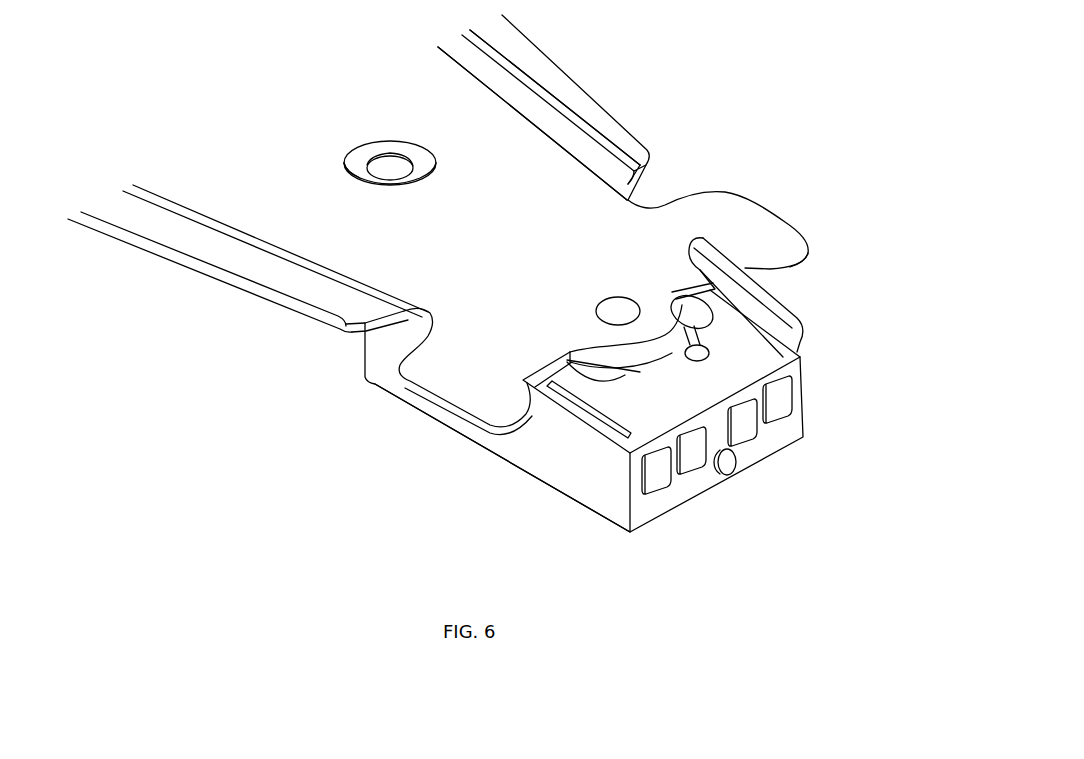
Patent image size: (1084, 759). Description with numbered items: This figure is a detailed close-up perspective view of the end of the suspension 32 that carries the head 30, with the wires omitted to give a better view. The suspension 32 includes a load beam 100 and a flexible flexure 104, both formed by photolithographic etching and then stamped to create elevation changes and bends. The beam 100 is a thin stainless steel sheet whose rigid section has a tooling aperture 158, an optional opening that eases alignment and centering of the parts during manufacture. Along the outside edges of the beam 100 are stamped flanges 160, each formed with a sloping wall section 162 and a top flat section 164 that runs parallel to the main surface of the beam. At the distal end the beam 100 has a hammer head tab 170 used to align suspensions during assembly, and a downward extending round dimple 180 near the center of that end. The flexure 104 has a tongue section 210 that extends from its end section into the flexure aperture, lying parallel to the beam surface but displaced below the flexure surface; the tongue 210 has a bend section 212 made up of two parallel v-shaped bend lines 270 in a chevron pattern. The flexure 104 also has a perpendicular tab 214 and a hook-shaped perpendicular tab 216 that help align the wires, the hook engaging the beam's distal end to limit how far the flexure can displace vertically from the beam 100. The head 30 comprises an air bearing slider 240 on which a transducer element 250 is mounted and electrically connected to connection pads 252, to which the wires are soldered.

The load beam 100 is at (343, 76).
The suspension 32 is at (252, 405).
The head 30 is at (378, 386).
The flexure 104 is at (419, 165).
The tooling aperture 158 is at (360, 156).
The outside edge flange 160 is at (515, 50).
The sloping wall section 162 is at (537, 112).
The top flat section 164 is at (587, 118).
The hammer head tab 170 is at (762, 207).
The round dimple 180 is at (615, 297).
The tongue section 210 is at (614, 358).
The bend section 212 is at (640, 370).
The perpendicular tab 214 is at (600, 418).
The perpendicular tab 216 is at (783, 322).
The air bearing slider 240 is at (520, 470).
The transducer element 250 is at (731, 474).
The connection pads 252 is at (783, 410).
The bend lines 270 is at (706, 326).